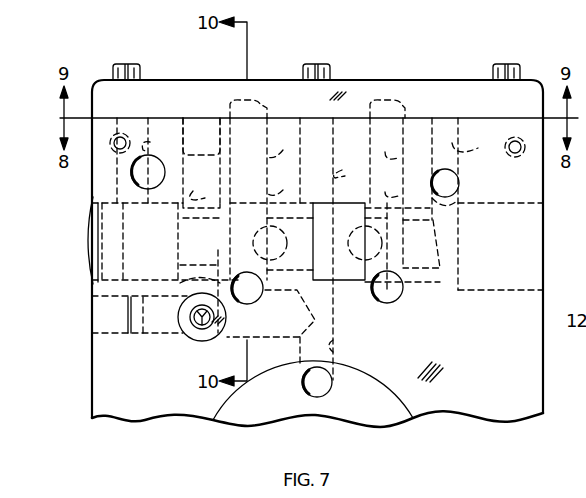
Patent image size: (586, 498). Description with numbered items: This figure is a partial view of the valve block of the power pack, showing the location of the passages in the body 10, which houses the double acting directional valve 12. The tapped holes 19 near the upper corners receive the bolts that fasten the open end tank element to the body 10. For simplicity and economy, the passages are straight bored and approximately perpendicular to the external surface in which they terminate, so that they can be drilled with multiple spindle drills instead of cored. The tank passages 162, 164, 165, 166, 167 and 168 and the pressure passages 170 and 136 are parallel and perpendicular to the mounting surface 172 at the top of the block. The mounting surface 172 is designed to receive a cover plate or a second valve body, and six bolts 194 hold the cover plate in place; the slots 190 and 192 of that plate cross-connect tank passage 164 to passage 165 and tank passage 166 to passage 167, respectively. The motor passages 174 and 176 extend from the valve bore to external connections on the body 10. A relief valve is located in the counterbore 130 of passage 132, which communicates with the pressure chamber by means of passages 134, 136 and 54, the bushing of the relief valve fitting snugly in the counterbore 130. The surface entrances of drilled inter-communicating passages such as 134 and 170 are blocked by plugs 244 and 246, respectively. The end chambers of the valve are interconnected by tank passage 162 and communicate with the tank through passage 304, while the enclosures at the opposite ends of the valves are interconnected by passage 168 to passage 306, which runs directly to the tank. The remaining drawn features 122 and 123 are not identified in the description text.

The body 10 is at (492, 346).
The valve 12 is at (420, 240).
The tapped holes 19 is at (122, 133).
The passage 54 is at (331, 385).
The passage 122 is at (263, 290).
The port 123 is at (390, 302).
The counterbore 130 is at (180, 340).
The passage 132 is at (210, 328).
The passage 134 is at (293, 337).
The pressure passage 136 is at (345, 347).
The tank passage 162 is at (161, 141).
The tank passage 164 is at (285, 144).
The tank passage 165 is at (284, 182).
The tank passage 166 is at (388, 145).
The tank passage 167 is at (387, 183).
The tank passage 168 is at (472, 139).
The pressure passage 170 is at (187, 287).
The mounting surface 172 is at (497, 118).
The motor passage 174 is at (262, 238).
The motor passage 176 is at (352, 237).
The slot 190 is at (268, 103).
The slot 192 is at (406, 103).
The bolts 194 is at (140, 72).
The plug 244 is at (105, 312).
The plug 246 is at (202, 127).
The passage 304 is at (140, 188).
The passage 306 is at (458, 181).